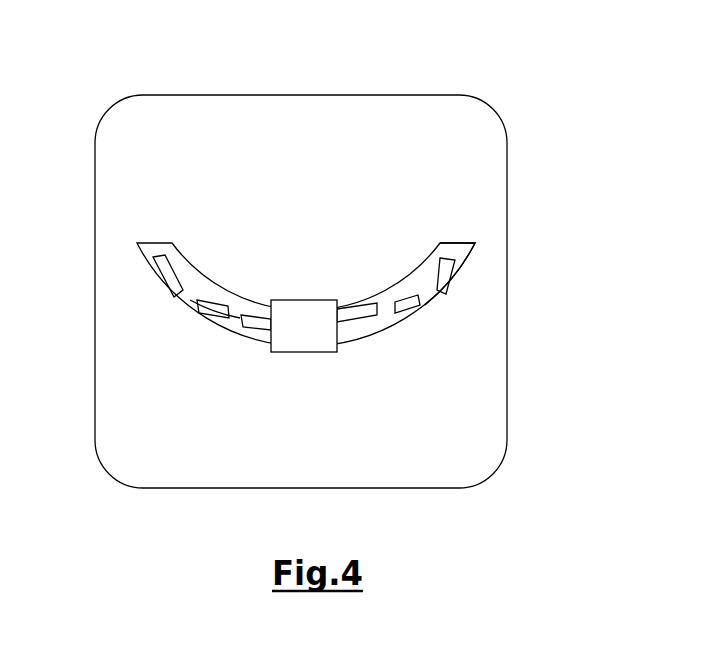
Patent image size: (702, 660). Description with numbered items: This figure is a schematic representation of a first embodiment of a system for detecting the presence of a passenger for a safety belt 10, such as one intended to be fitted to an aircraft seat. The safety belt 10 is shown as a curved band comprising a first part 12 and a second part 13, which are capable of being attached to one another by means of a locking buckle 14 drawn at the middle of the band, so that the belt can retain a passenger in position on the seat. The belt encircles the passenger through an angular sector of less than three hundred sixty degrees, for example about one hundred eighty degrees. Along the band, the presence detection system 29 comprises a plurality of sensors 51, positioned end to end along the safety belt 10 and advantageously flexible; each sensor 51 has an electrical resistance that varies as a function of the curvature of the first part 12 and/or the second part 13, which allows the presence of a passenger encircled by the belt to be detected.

The safety belt 10 is at (245, 373).
The first part 12 is at (185, 307).
The second part 13 is at (430, 302).
The locking buckle 14 is at (310, 353).
The presence detection system 29 is at (223, 301).
The sensor 51 is at (220, 306).